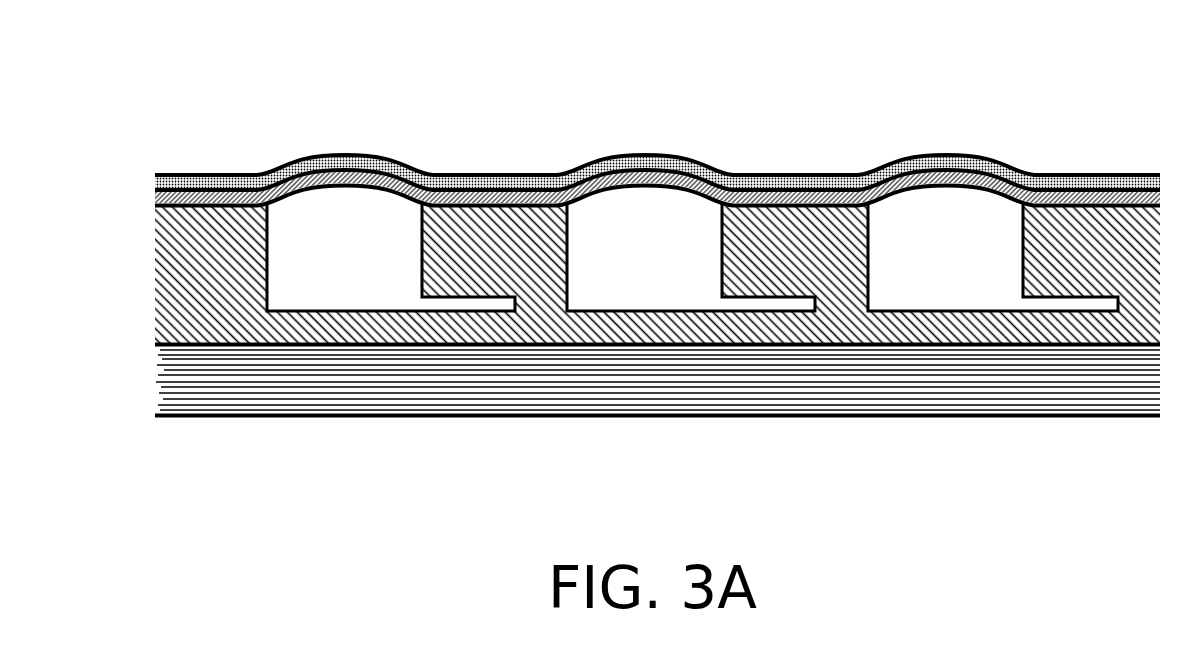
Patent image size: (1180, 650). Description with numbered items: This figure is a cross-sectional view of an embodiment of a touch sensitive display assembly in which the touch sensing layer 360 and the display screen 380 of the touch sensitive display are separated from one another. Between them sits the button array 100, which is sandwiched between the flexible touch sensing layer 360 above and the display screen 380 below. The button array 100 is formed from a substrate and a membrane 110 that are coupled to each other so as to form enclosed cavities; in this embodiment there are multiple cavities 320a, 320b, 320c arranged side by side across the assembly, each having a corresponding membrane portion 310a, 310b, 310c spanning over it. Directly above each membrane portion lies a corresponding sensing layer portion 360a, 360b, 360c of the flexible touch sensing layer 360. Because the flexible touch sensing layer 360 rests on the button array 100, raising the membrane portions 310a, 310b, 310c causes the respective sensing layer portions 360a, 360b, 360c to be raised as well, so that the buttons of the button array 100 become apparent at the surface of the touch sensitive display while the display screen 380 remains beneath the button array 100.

The button array 100 is at (600, 338).
The membrane 110 is at (483, 175).
The touch sensing layer 360 is at (600, 108).
The sensing layer portion 360a is at (333, 153).
The sensing layer portion 360b is at (632, 153).
The sensing layer portion 360c is at (927, 153).
The membrane portion 310a is at (345, 153).
The membrane portion 310b is at (642, 153).
The membrane portion 310c is at (945, 153).
The cavity 320a is at (343, 312).
The cavity 320b is at (643, 313).
The cavity 320c is at (950, 313).
The display screen 380 is at (143, 342).